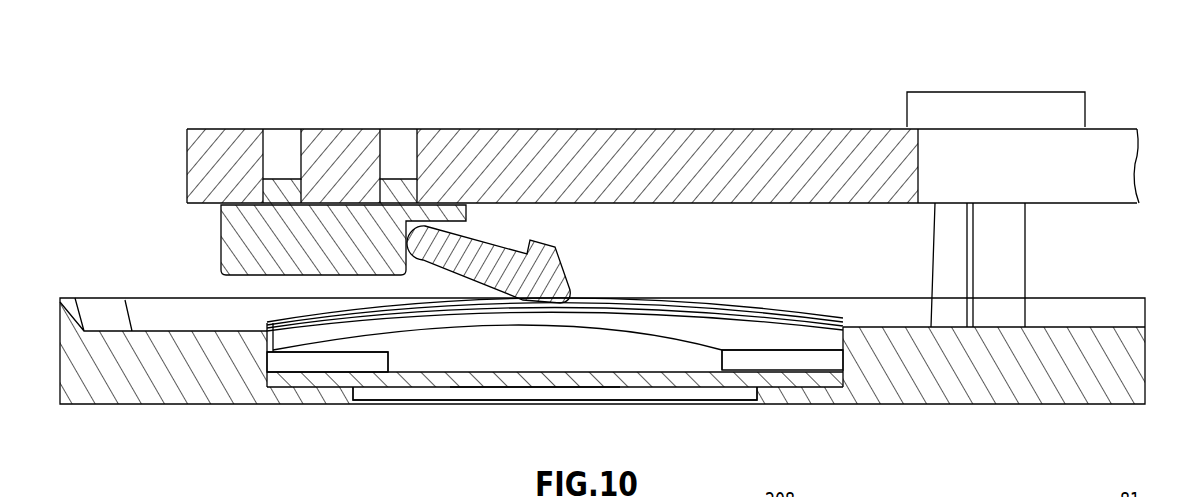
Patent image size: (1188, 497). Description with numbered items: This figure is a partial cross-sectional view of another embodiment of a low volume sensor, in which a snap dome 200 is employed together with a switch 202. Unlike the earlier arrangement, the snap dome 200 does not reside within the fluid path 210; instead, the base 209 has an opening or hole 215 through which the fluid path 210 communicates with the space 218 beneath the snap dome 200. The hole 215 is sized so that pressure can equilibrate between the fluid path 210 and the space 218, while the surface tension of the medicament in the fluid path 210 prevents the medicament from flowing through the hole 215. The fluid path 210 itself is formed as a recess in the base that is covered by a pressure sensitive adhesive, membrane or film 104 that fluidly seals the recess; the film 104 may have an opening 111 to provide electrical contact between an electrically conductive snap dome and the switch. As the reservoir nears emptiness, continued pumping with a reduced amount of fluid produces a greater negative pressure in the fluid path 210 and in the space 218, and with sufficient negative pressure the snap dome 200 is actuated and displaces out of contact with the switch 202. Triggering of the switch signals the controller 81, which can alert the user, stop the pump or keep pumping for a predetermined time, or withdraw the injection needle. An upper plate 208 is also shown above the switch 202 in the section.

The controller 81 is at (1067, 92).
The film 104 is at (800, 313).
The opening 111 is at (578, 287).
The snap dome 200 is at (715, 327).
The switch 202 is at (221, 238).
The top plate 208 is at (803, 135).
The base 209 is at (115, 397).
The fluid path 210 is at (408, 393).
The hole 215 is at (535, 393).
The space 218 is at (617, 361).